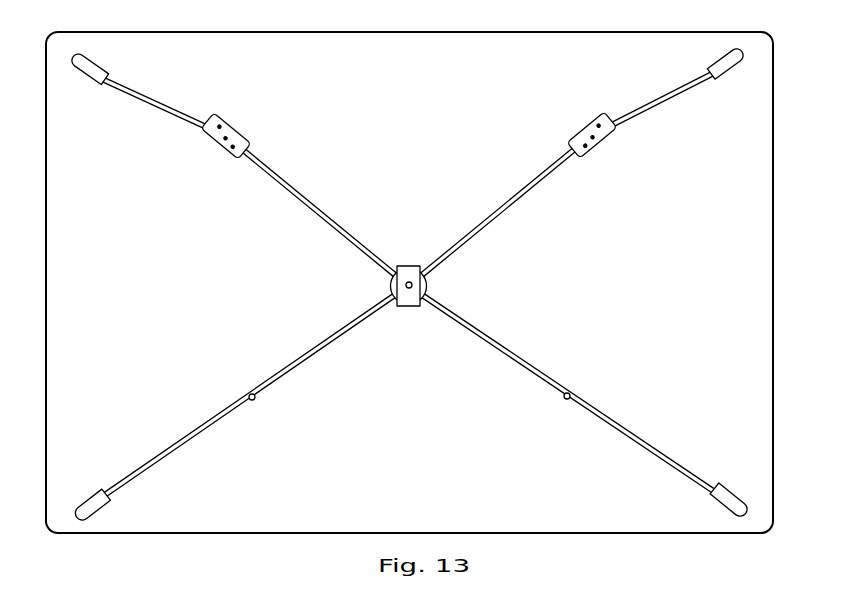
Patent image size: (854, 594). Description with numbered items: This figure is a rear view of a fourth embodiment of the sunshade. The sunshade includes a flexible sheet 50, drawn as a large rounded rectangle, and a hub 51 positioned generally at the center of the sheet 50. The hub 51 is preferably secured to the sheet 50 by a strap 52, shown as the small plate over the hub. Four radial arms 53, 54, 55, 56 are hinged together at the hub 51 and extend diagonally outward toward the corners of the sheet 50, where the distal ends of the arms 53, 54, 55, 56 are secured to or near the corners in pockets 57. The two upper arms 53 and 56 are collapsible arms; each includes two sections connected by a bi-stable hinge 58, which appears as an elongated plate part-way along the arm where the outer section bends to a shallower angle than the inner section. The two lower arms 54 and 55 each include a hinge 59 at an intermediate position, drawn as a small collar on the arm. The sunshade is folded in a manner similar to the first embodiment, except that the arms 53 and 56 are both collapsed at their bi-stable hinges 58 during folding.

The flexible sheet 50 is at (548, 53).
The hub 51 is at (428, 283).
The strap 52 is at (410, 307).
The radial arm 53 is at (300, 203).
The radial arm 54 is at (205, 426).
The radial arm 55 is at (618, 426).
The radial arm 56 is at (516, 202).
The pocket 57 is at (90, 80).
The bi-stable hinge 58 is at (217, 142).
The hinge 59 is at (250, 395).